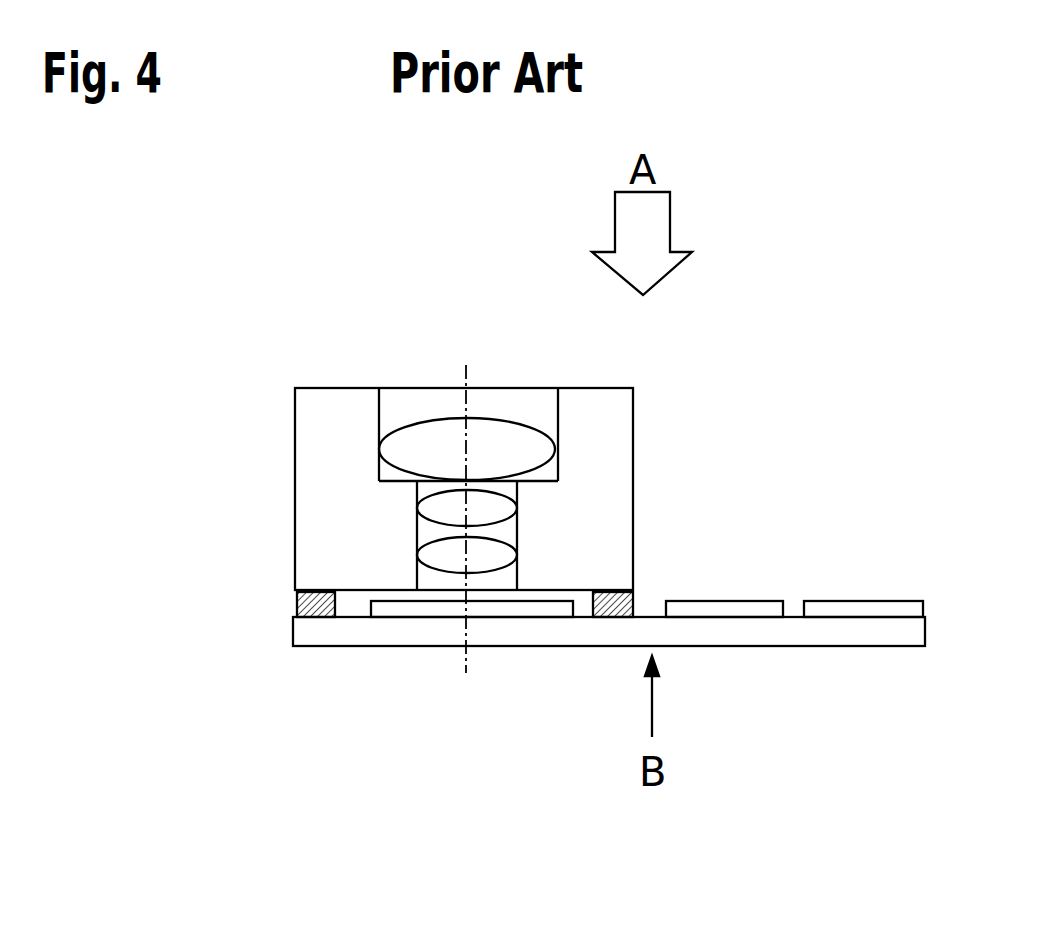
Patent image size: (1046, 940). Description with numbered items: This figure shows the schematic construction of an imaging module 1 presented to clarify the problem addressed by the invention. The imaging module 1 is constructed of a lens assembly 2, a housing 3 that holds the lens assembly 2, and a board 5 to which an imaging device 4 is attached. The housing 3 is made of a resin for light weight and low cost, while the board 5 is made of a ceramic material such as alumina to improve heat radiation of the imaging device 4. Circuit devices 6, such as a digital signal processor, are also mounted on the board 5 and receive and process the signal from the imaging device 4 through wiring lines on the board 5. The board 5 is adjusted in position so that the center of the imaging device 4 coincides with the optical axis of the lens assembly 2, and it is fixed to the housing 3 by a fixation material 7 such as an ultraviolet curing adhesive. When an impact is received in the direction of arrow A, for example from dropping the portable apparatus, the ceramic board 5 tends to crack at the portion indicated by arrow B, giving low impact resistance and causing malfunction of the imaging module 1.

The imaging module 1 is at (471, 433).
The lens assembly 2 is at (363, 404).
The housing 3 is at (310, 417).
The imaging device 4 is at (377, 608).
The board 5 is at (417, 640).
The circuit devices 6 is at (708, 582).
The fixation material 7 is at (632, 598).